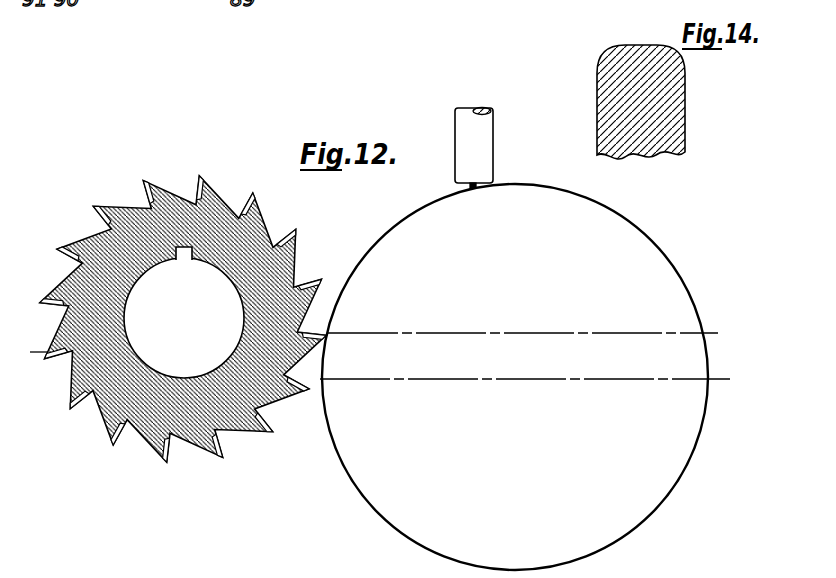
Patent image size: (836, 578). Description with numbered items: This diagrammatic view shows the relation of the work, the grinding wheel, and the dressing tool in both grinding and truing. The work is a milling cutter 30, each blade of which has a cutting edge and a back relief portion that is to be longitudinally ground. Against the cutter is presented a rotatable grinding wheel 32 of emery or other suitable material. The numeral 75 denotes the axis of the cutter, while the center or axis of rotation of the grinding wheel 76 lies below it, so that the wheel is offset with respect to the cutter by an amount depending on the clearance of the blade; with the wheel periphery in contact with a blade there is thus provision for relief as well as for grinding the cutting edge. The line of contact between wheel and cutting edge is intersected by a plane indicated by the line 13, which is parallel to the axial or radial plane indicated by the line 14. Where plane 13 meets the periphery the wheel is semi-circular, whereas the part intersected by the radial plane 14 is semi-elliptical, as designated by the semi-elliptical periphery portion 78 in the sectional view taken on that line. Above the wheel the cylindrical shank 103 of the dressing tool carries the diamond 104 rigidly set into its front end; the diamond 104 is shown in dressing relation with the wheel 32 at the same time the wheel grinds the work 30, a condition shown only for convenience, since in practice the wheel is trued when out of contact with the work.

In FIG. 12, the milling cutter 30 is at (208, 444).
In FIG. 12, the axis of the cutter 75 is at (184, 321).
In FIG. 12, the grinding wheel 32 is at (657, 509).
In FIG. 14, the grinding wheel 32 is at (686, 140).
In FIG. 12, the line indicating plane of contact 13 is at (538, 333).
In FIG. 12, the line indicating axial plane 14 is at (524, 379).
In FIG. 12, the center of rotation of the grinding wheel 76 is at (517, 380).
In FIG. 12, the cylindrical shank 103 is at (494, 143).
In FIG. 12, the diamond 104 is at (468, 187).
In FIG. 14, the semi-elliptical part of the wheel periphery 78 is at (629, 46).